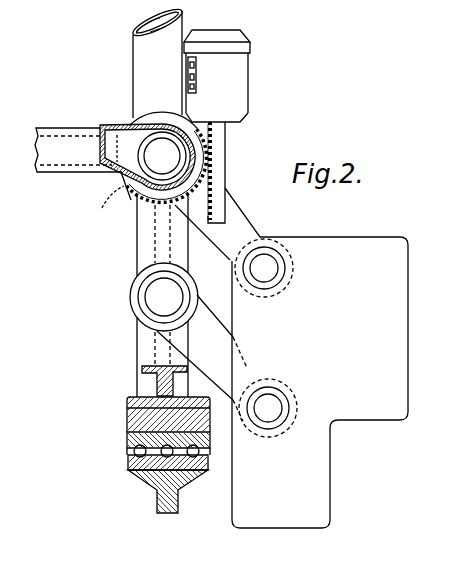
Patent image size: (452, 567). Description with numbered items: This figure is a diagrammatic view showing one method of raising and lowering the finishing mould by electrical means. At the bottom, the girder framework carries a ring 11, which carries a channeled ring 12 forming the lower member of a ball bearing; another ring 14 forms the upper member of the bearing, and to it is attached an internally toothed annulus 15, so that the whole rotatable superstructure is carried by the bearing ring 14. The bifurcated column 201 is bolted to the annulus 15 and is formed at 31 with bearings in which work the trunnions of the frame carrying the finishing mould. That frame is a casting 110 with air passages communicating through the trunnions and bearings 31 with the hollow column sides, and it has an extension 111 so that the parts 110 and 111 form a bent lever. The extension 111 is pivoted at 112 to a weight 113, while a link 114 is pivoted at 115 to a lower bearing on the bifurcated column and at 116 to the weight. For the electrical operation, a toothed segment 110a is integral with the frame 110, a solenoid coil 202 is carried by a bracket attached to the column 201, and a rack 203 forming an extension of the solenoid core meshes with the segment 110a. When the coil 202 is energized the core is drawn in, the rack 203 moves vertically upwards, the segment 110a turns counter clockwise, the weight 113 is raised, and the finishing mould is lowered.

The ring 11 is at (157, 503).
The channeled ring 12 is at (127, 462).
The ring 14 is at (127, 442).
The internally toothed annulus 15 is at (127, 418).
The bearings 31 is at (167, 155).
The casting 110 is at (70, 129).
The toothed segment 110a is at (134, 194).
The extension 111 is at (238, 223).
The pivot 112 is at (265, 268).
The weight 113 is at (320, 382).
The link 114 is at (192, 308).
The pivot 115 is at (155, 300).
The pivot 116 is at (275, 402).
The bifurcated column 201 is at (133, 60).
The coil of a solenoid 202 is at (229, 89).
The rack 203 is at (225, 172).